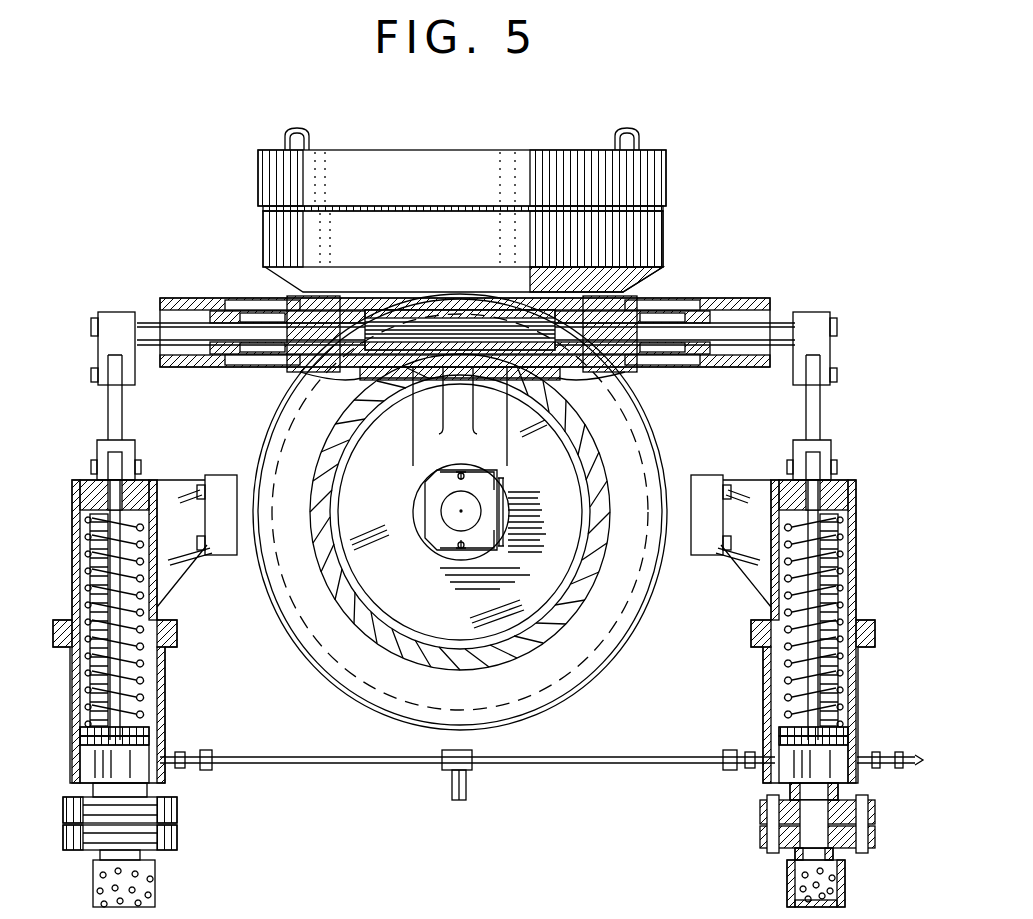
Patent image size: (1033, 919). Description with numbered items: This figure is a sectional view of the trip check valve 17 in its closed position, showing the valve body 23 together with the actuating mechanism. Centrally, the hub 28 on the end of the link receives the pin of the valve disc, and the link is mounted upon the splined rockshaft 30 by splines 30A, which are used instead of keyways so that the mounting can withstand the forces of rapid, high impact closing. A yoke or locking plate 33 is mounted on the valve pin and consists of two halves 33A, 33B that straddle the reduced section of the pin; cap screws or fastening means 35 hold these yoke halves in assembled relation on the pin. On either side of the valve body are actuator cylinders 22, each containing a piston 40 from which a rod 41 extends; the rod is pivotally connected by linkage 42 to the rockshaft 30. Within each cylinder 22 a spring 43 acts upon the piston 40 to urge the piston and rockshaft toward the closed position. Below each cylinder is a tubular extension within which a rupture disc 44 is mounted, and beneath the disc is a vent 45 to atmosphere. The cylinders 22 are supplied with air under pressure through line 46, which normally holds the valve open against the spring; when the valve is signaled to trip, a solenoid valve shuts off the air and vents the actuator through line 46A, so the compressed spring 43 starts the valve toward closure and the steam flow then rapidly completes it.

The check valve 17 is at (668, 180).
The splined rockshaft 30 is at (183, 338).
The splines 30A is at (467, 326).
The valve body 23 is at (618, 640).
The hub 28 is at (503, 512).
The yoke 33 is at (426, 508).
The yoke half 33A is at (481, 482).
The yoke half 33B is at (437, 540).
The cap screws 35 is at (503, 537).
The rod 41 is at (814, 526).
The actuator cylinder 22 is at (857, 558).
The spring 43 is at (843, 578).
The linkage 42 is at (811, 406).
The piston 40 is at (777, 715).
The vent 45 is at (788, 885).
The rupture disc 44 is at (818, 828).
The line 46 is at (452, 786).
The line 46A is at (882, 755).